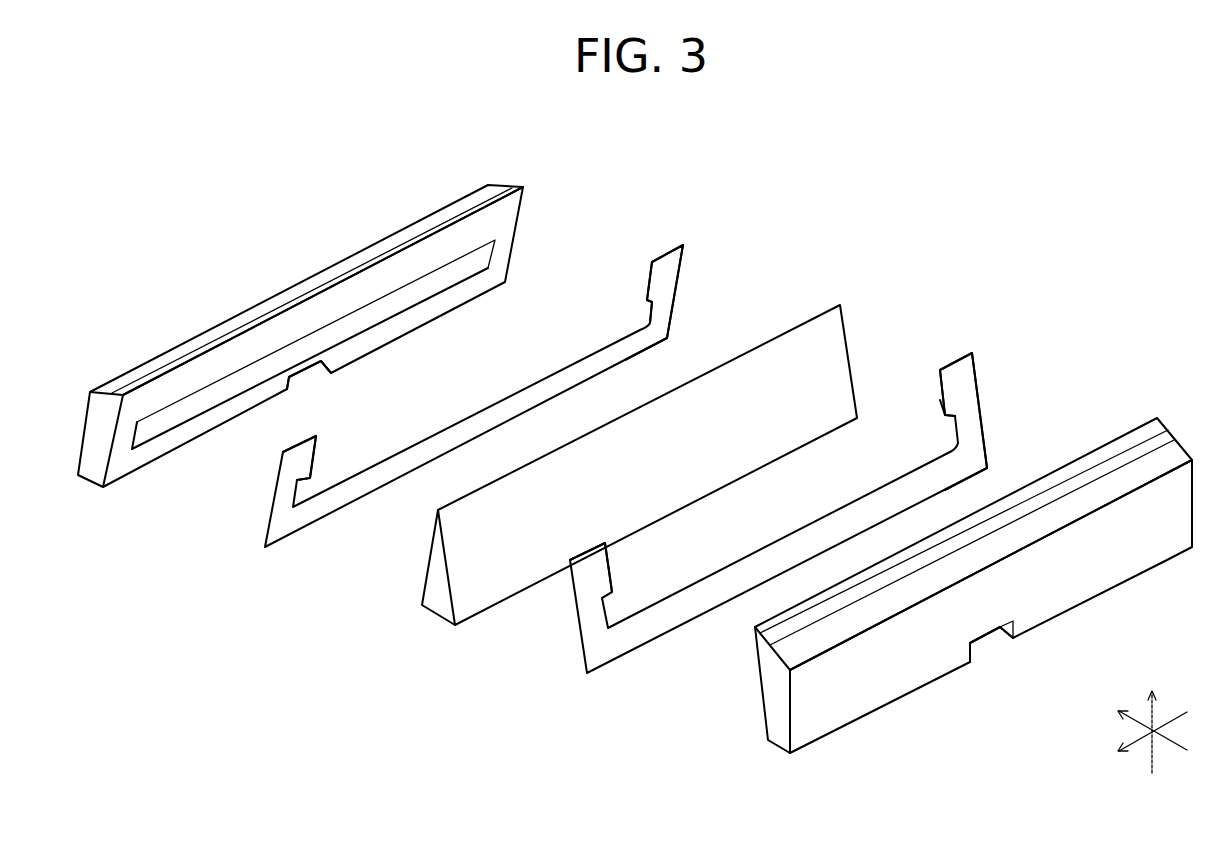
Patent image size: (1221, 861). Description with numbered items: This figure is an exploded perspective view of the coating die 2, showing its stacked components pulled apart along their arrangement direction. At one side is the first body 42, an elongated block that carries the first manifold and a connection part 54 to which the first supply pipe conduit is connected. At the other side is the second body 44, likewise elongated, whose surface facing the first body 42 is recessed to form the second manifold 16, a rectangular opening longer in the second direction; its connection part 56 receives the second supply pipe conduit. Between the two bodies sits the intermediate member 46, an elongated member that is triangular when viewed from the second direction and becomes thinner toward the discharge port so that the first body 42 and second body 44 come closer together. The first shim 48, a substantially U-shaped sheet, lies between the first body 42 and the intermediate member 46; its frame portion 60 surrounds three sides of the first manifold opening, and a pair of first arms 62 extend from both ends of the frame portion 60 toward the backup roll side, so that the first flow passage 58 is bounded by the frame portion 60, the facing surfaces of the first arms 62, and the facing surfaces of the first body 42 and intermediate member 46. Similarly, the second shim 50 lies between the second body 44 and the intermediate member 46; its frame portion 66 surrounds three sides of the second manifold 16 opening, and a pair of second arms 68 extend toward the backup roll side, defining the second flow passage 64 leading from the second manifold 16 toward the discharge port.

The coating die 2 is at (623, 817).
The second manifold 16 is at (486, 246).
The first body 42 is at (973, 622).
The second body 44 is at (328, 374).
The intermediate member 46 is at (438, 621).
The first shim 48 is at (799, 533).
The second shim 50 is at (486, 416).
The connection part 54 is at (1000, 633).
The connection part 56 is at (326, 366).
The first flow passage 58 is at (955, 421).
The frame portion 60 is at (978, 463).
The first arms 62 is at (595, 580).
The second flow passage 64 is at (652, 303).
The frame portion 66 is at (658, 337).
The second arms 68 is at (293, 470).